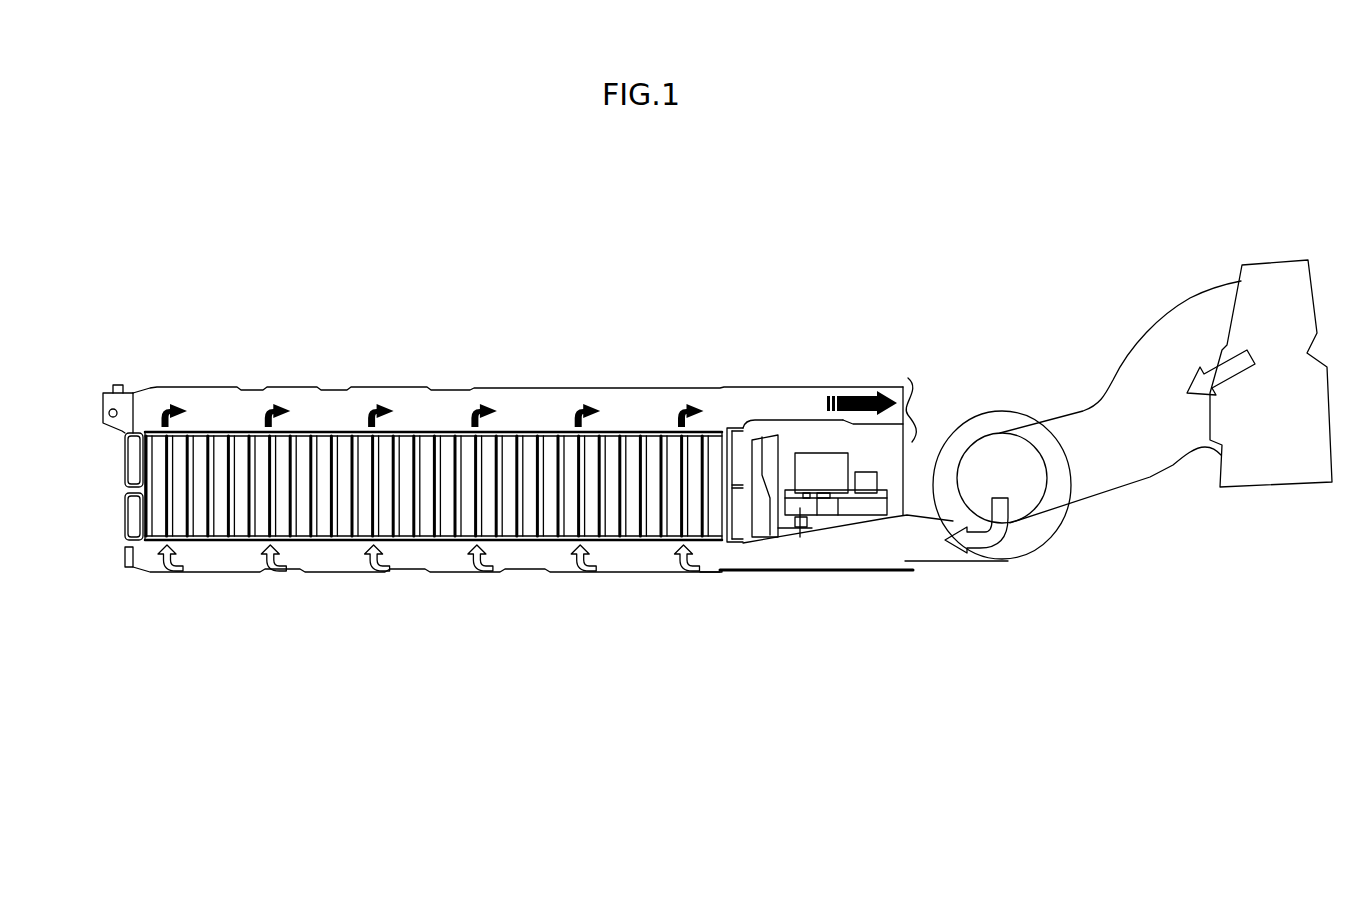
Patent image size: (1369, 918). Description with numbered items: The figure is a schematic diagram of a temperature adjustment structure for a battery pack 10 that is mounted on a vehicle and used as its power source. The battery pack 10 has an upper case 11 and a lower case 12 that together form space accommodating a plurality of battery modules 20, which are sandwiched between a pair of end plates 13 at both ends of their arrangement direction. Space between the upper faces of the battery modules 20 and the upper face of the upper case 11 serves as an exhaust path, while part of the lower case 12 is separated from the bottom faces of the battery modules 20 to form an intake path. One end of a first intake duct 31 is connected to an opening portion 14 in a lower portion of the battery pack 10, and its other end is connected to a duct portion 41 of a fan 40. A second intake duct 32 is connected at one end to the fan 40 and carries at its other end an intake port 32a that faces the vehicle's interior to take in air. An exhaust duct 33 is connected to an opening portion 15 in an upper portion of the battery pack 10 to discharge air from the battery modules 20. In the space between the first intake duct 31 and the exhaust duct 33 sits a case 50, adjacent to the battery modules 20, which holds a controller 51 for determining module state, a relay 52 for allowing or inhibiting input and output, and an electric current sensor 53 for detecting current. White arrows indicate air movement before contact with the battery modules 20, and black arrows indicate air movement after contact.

The battery pack 10 is at (267, 370).
The upper case 11 is at (407, 388).
The lower case 12 is at (340, 573).
The end plate 13 is at (127, 503).
The opening portion 14 is at (728, 557).
The opening portion 15 is at (728, 407).
The battery module 20 is at (530, 515).
The first intake duct 31 is at (883, 555).
The second intake duct 32 is at (1148, 478).
The intake port 32a is at (1277, 487).
The exhaust duct 33 is at (797, 385).
The fan 40 is at (1053, 533).
The duct portion 41 is at (933, 564).
The case 50 is at (903, 483).
The controller 51 is at (768, 453).
The relay 52 is at (811, 462).
The electric current sensor 53 is at (867, 477).